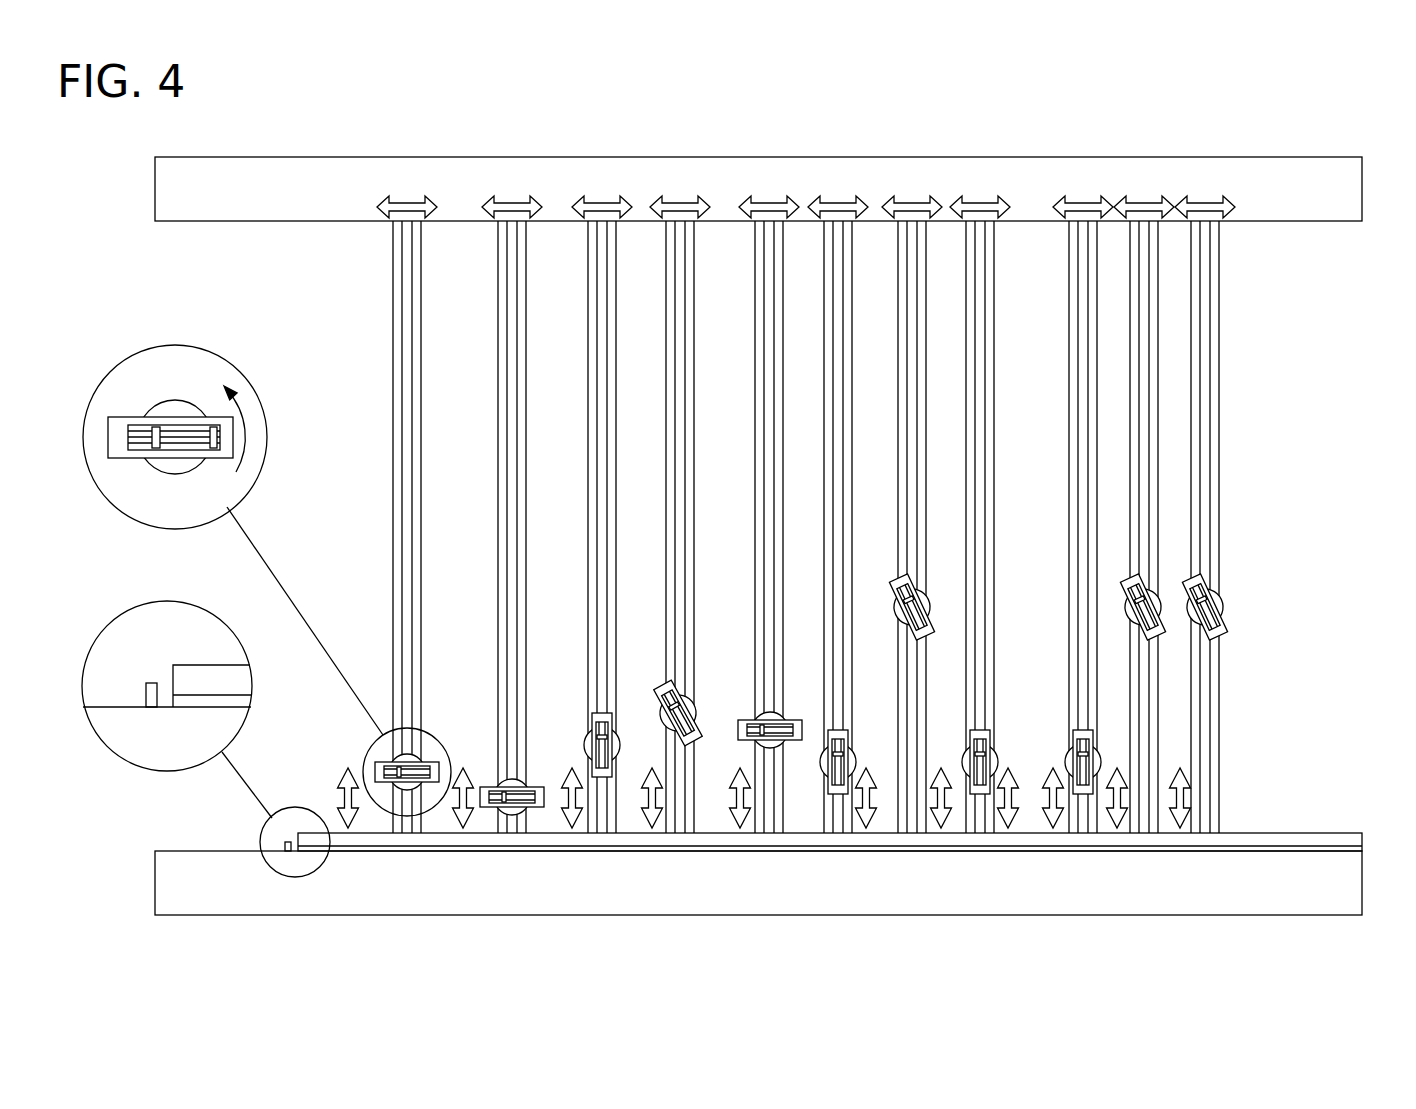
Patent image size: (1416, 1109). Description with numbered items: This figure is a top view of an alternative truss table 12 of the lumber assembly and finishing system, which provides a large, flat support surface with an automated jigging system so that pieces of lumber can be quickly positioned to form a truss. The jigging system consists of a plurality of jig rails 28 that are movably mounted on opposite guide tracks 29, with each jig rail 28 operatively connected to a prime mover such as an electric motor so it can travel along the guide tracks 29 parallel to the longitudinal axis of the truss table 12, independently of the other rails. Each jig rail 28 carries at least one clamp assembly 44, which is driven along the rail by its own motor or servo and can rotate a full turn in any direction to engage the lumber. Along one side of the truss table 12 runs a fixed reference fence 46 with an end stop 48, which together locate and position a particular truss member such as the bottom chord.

The truss table 12 is at (1285, 85).
The jig rail 28 is at (498, 260).
The guide track 29 is at (1313, 165).
The clamp assembly 44 is at (584, 750).
The reference fence 46 is at (1333, 833).
The end stop 48 is at (150, 683).